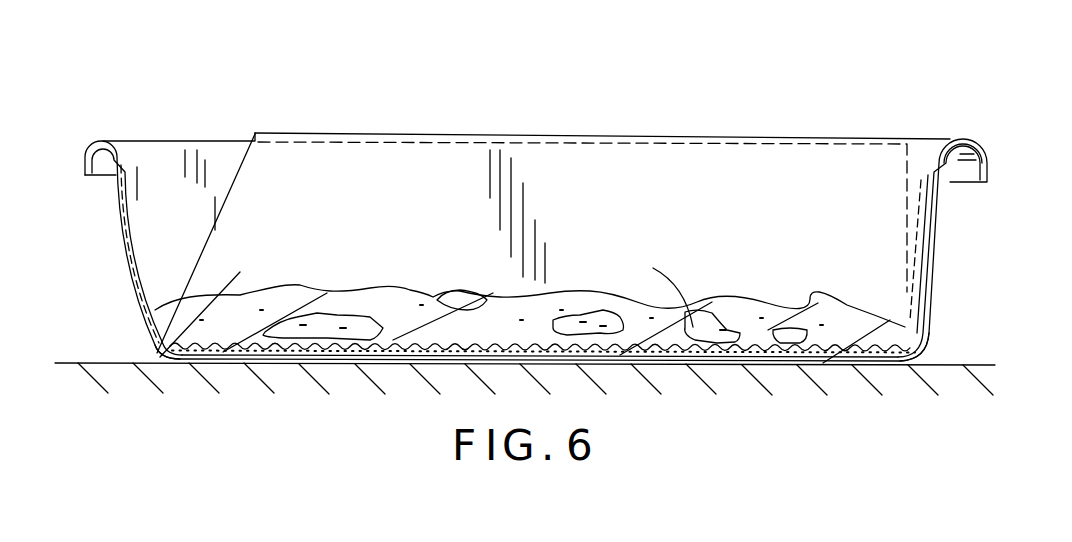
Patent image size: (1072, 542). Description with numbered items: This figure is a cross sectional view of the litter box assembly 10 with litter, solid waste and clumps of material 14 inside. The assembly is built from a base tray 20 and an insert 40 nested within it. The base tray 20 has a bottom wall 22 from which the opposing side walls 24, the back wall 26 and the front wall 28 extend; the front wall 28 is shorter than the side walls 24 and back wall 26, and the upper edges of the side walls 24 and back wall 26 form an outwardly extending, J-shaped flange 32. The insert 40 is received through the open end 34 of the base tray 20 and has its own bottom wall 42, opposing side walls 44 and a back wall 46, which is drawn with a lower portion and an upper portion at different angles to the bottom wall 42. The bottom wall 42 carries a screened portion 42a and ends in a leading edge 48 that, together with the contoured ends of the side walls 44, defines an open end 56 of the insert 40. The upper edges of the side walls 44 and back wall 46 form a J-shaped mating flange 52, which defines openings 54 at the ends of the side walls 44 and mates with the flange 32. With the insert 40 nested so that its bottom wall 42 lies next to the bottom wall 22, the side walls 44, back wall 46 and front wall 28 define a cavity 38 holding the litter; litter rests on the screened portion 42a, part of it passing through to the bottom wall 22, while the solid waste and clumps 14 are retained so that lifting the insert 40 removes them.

The litter box assembly 10 is at (686, 53).
The solid waste and clumps of material 14 is at (341, 326).
The base tray 20 is at (130, 310).
The bottom wall 22 is at (335, 363).
The opposing side walls 24 is at (172, 148).
The back wall 26 is at (118, 228).
The front wall 28 is at (920, 338).
The flange 32 is at (103, 141).
The open end 34 is at (902, 182).
The cavity 38 is at (578, 178).
The insert 40 is at (949, 219).
The bottom wall 42 is at (208, 352).
The screened portion 42a is at (528, 344).
The opposing side walls 44 is at (784, 190).
The back wall 46 is at (933, 243).
The leading edge 48 is at (160, 362).
The mating flange 52 is at (958, 138).
The openings 54 is at (976, 160).
The open end 56 is at (240, 172).